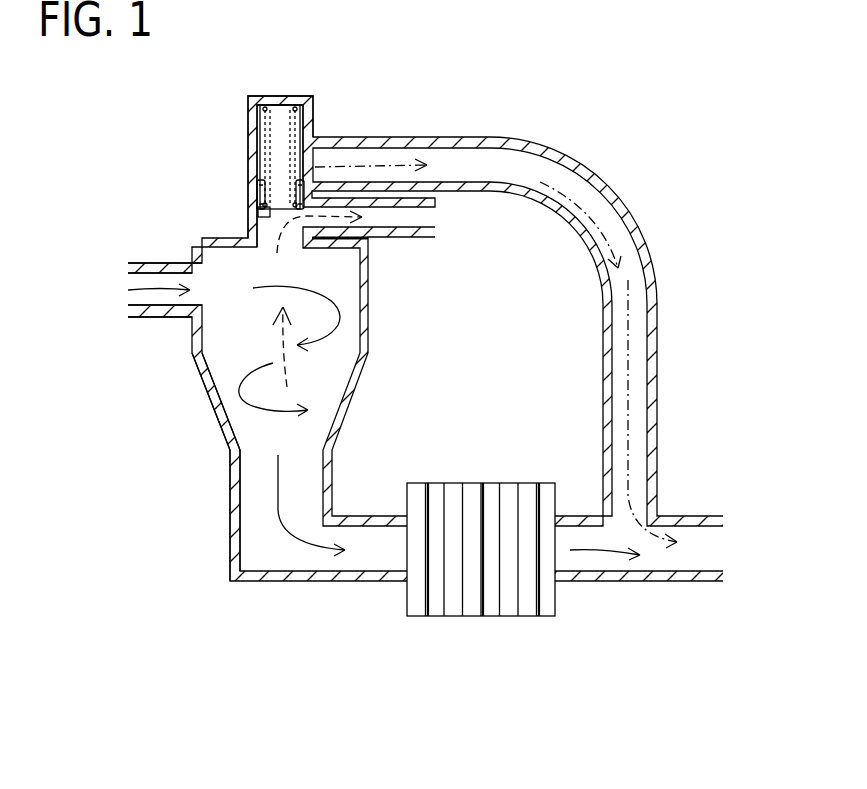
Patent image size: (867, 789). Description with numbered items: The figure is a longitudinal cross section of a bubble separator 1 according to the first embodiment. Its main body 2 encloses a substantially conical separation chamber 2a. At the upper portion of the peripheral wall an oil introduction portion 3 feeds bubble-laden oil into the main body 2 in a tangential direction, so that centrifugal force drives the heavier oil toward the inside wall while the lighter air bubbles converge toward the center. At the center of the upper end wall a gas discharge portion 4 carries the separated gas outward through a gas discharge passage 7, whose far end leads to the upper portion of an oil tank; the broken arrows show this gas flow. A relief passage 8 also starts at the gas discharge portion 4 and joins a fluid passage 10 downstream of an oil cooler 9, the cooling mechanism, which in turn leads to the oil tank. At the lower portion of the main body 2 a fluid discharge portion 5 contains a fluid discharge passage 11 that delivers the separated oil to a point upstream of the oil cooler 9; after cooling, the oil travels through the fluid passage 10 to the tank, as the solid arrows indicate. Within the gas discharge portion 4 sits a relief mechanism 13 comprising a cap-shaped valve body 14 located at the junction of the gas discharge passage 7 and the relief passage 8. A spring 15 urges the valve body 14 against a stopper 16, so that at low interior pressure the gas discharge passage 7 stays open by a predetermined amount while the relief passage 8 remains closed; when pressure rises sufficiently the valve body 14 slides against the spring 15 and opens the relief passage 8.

The bubble separator 1 is at (139, 219).
The main body 2 is at (234, 355).
The separation chamber 2a is at (223, 363).
The oil introduction portion 3 is at (145, 311).
The gas discharge portion 4 is at (239, 199).
The fluid discharge portion 5 is at (225, 519).
The gas discharge passage 7 is at (401, 211).
The relief passage 8 is at (497, 161).
The oil cooler 9 is at (453, 483).
The fluid passage 10 is at (689, 542).
The fluid discharge passage 11 is at (266, 532).
The relief mechanism 13 is at (229, 171).
The valve body 14 is at (292, 130).
The spring 15 is at (300, 130).
The stopper 16 is at (247, 226).